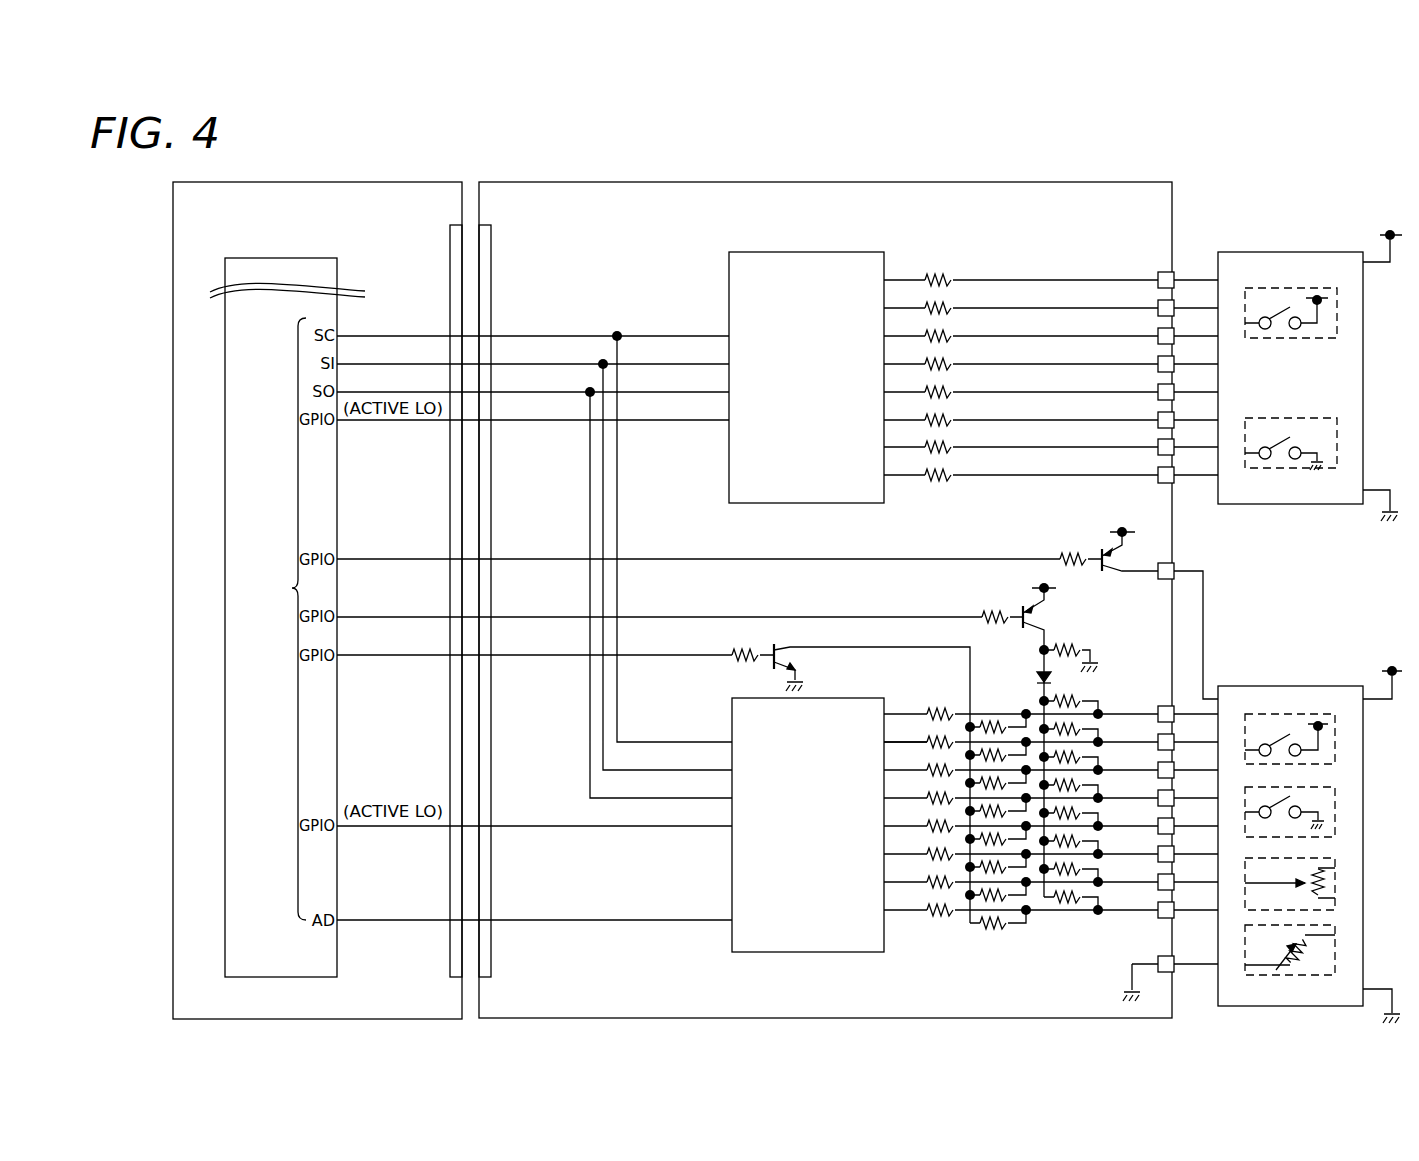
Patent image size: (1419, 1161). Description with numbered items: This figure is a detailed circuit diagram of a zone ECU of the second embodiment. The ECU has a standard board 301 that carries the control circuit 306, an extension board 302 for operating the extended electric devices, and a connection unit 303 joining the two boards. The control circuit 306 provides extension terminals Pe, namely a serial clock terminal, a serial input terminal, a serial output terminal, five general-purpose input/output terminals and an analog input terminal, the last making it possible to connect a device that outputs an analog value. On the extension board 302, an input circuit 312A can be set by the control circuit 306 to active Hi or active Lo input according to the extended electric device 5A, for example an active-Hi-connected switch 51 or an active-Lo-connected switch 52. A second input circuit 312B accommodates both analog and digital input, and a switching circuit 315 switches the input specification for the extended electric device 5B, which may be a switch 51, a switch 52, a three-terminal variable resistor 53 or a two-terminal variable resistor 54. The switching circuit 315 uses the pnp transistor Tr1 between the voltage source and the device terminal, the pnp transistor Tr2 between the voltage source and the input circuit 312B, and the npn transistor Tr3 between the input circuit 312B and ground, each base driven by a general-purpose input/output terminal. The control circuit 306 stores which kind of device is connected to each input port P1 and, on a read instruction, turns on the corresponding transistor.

The standard board 301 is at (283, 182).
The extension board 302 is at (734, 182).
The connection unit 303 is at (467, 335).
The control circuit 306 is at (337, 275).
The input circuit 312A is at (810, 252).
The input circuit 312B is at (828, 698).
The switching circuit 315 is at (1161, 556).
The extended electric device 5A is at (1290, 252).
The extended electric device 5B is at (1280, 686).
The switch 51 is at (1308, 340).
The switch 52 is at (1290, 470).
The three-terminal variable resistor 53 is at (1320, 858).
The two-terminal variable resistor 54 is at (1335, 950).
The transistor Tr1 is at (1106, 554).
The transistor Tr2 is at (1027, 611).
The transistor Tr3 is at (787, 650).
The input port P1 is at (886, 742).
The extension terminals Pe is at (284, 619).